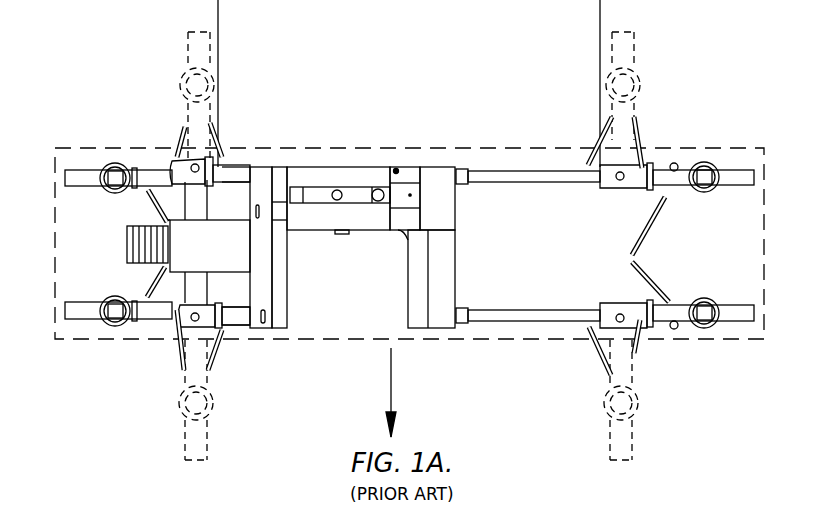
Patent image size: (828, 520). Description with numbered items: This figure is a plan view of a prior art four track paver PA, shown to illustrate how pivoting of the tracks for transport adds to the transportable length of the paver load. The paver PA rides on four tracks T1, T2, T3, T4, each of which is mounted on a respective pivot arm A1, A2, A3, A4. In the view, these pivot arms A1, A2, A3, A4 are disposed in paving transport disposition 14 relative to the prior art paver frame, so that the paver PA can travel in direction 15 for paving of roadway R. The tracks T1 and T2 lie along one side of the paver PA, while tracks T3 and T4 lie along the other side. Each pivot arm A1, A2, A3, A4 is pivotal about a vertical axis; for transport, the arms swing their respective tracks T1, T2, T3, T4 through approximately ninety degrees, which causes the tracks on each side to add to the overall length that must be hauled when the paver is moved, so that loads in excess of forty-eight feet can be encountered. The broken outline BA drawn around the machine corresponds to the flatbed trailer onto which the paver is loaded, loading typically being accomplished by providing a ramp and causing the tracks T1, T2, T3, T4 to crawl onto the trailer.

The paving transport disposition 14 is at (78, 189).
The direction 15 is at (222, 52).
The roadway R is at (418, 47).
The prior art four track paver PA is at (540, 266).
The platform boundary BA is at (299, 341).
The track T1 is at (85, 167).
The track T2 is at (88, 325).
The track T3 is at (737, 337).
The track T4 is at (734, 167).
The pivot arm A1 is at (158, 165).
The pivot arm A2 is at (165, 328).
The pivot arm A3 is at (669, 293).
The pivot arm A4 is at (667, 200).